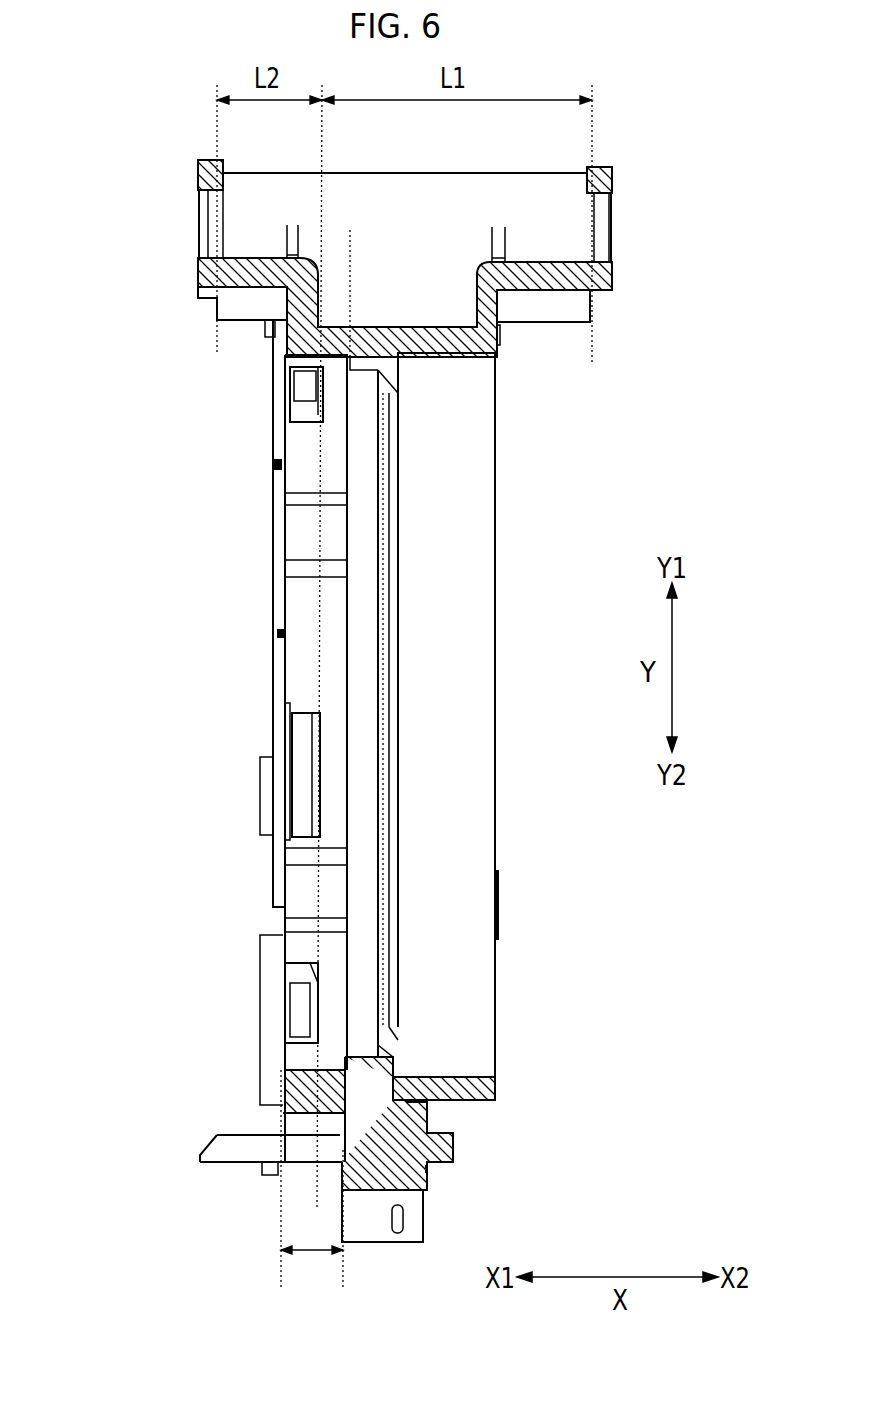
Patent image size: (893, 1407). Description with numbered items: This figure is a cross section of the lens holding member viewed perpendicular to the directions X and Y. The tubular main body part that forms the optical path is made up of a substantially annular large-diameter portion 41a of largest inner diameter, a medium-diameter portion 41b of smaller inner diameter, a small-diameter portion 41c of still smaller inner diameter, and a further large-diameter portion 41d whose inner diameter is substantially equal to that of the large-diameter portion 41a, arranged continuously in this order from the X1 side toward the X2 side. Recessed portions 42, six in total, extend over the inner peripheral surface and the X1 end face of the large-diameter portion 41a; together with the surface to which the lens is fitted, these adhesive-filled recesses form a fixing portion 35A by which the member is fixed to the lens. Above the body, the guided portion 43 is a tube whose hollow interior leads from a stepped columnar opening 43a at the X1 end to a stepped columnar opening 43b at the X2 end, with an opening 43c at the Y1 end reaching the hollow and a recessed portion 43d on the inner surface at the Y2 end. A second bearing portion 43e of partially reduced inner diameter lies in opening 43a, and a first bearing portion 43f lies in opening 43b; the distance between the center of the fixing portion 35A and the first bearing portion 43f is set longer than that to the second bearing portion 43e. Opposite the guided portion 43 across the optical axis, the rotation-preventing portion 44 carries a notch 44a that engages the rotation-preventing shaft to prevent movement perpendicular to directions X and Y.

The guided portion 43 is at (397, 274).
The stepped columnar opening 43a is at (190, 237).
The stepped columnar opening 43b is at (622, 246).
The opening 43c is at (412, 200).
The recessed portion 43d is at (497, 345).
The second bearing portion 43e is at (225, 207).
The first bearing portion 43f is at (587, 205).
The large-diameter portion 41a is at (280, 363).
The medium-diameter portion 41b is at (347, 378).
The small-diameter portion 41c is at (380, 473).
The large-diameter portion 41d is at (452, 315).
The recessed portion 42 is at (303, 378).
The rotation-preventing portion 44 is at (388, 1149).
The notch 44a is at (417, 1218).
The fixing portion 35A is at (318, 1252).